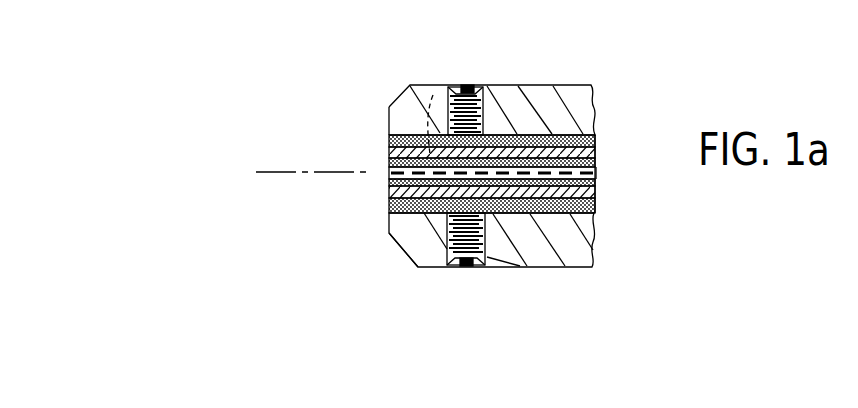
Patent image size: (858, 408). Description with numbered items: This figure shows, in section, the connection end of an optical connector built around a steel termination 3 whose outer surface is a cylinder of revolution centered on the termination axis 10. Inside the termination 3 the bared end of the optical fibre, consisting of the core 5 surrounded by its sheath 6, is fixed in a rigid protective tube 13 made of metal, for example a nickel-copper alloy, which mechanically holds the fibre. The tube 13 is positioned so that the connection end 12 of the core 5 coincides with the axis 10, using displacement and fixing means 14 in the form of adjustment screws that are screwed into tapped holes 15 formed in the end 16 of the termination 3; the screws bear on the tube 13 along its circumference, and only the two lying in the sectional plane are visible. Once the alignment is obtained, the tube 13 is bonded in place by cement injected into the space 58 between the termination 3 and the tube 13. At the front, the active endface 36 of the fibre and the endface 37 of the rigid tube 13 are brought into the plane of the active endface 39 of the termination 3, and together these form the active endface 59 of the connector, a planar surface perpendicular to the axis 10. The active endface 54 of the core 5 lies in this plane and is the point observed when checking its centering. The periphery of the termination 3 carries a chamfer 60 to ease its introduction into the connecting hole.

The termination 3 is at (560, 98).
The core 5 is at (612, 165).
The sheath 6 is at (600, 173).
The termination axis 10 is at (250, 173).
The connection end of core 12 is at (433, 95).
The rigid protective tube 13 is at (600, 195).
The displacement and fixing means 14 is at (478, 90).
The tapped holes 15 is at (520, 266).
The end of termination 16 is at (398, 265).
The active endface of fibre 36 is at (383, 165).
The endface of rigid tube 37 is at (387, 192).
The active endface of termination 39 is at (388, 227).
The active endface of core 54 is at (387, 175).
The space 58 is at (387, 138).
The active endface of the optical connector 59 is at (333, 126).
The chamfer 60 is at (389, 107).